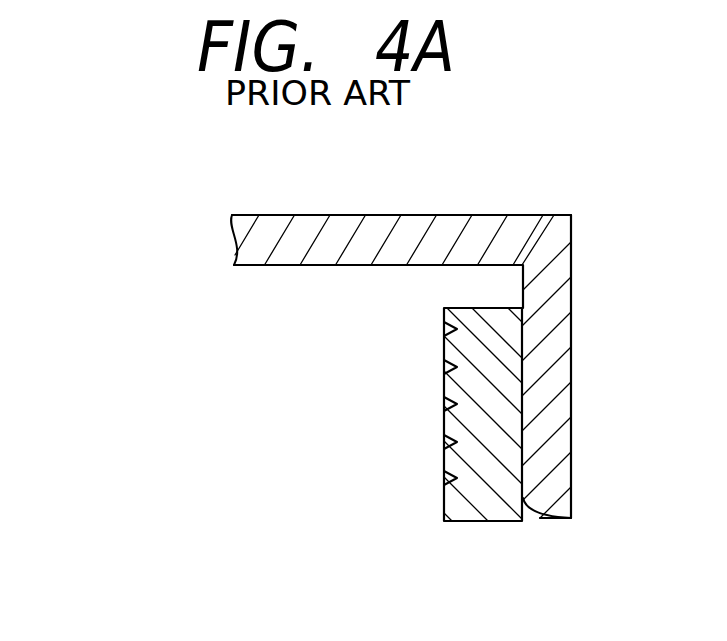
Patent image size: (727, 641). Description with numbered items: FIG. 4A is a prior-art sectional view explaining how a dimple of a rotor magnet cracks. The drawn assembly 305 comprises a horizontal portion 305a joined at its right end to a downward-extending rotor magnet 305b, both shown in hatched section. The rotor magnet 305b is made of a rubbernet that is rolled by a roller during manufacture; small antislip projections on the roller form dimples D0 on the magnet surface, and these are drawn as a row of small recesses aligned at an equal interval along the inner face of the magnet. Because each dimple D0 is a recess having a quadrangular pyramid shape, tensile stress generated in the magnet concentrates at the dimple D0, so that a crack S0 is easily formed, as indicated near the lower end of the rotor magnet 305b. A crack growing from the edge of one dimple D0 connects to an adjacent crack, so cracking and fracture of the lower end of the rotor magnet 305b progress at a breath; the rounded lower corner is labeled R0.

The prior art magnetic head core / member 305 is at (177, 207).
The horizontal plate portion 305a is at (425, 230).
The rotor magnet 305b is at (503, 397).
The dimple D0 is at (443, 326).
The crack S0 is at (490, 487).
The corner radius R0 is at (526, 500).